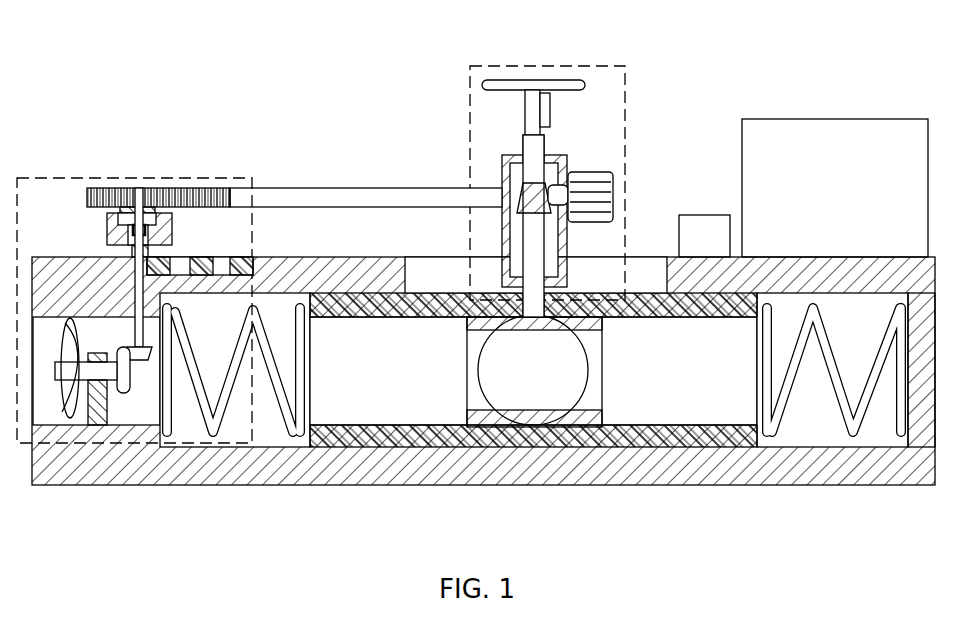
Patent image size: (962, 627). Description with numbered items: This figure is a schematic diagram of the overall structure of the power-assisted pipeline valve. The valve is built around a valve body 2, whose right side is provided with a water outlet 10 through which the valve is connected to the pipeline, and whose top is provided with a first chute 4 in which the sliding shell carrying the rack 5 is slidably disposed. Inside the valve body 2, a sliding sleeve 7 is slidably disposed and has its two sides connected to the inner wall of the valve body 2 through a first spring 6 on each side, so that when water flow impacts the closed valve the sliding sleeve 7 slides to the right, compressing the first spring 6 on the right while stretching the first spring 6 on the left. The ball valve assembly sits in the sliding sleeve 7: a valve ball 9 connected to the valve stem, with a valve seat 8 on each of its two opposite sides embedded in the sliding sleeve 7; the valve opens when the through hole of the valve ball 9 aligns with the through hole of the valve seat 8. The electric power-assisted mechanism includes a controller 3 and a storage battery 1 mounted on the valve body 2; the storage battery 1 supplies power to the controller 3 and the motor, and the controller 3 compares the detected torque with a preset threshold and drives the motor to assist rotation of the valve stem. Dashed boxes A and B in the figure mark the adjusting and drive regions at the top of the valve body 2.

The storage battery 1 is at (837, 140).
The valve body 2 is at (483, 254).
The controller 3 is at (744, 140).
The first chute 4 is at (576, 158).
The rack 5 is at (366, 163).
The first spring 6 is at (534, 427).
The sliding sleeve 7 is at (511, 419).
The valve seat 8 is at (494, 340).
The valve ball 9 is at (517, 430).
The water outlet 10 is at (872, 419).
The adjusting assembly A is at (578, 170).
The drive assembly B is at (166, 281).